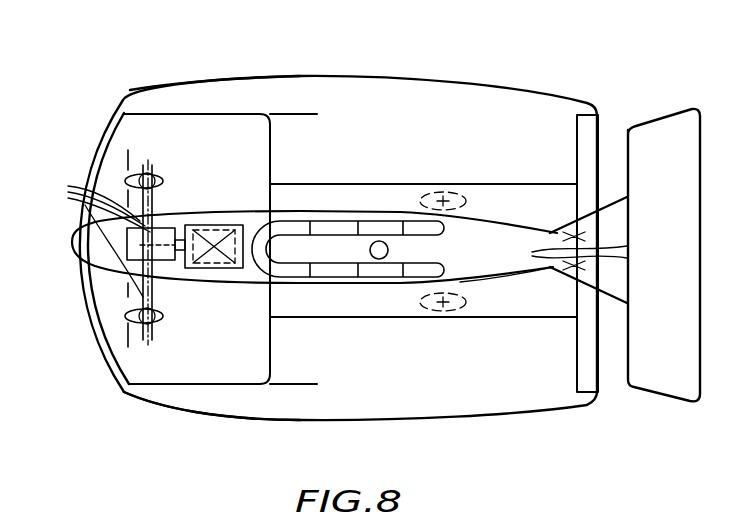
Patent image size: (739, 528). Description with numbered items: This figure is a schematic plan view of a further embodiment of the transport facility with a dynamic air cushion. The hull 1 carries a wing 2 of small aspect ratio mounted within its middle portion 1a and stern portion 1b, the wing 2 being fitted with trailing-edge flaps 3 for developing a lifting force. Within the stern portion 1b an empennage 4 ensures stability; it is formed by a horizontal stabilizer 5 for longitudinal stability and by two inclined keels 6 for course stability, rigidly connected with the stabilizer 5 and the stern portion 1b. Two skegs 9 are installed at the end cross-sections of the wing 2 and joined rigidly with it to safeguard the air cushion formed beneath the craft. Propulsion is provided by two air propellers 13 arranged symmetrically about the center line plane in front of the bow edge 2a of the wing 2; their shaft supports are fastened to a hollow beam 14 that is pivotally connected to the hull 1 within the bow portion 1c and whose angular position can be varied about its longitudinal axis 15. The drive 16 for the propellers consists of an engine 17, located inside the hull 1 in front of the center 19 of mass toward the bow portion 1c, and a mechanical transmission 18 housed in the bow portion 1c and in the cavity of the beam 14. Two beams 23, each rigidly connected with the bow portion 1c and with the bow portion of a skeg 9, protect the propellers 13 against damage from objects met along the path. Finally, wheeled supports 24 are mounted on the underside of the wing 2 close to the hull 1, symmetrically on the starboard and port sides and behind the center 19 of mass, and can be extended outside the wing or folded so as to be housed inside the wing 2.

The hull 1 is at (496, 208).
The middle portion 1a is at (380, 287).
The stern portion 1b is at (520, 283).
The bow portion 1c is at (234, 142).
The wing 2 is at (354, 145).
The bow edge 2a is at (268, 147).
The trailing-edge flaps 3 is at (600, 127).
The empennage 4 is at (617, 133).
The horizontal stabilizer 5 is at (673, 127).
The inclined keels 6 is at (548, 250).
The skegs 9 is at (298, 88).
The air propellers 13 is at (129, 153).
The beam 14 is at (153, 187).
The longitudinal axis 15 is at (129, 340).
The drive 16 is at (182, 262).
The engine 17 is at (253, 278).
The mechanical transmission 18 is at (91, 233).
The center of mass 19 is at (388, 250).
The beams 23 is at (97, 142).
The wheeled supports 24 is at (445, 190).